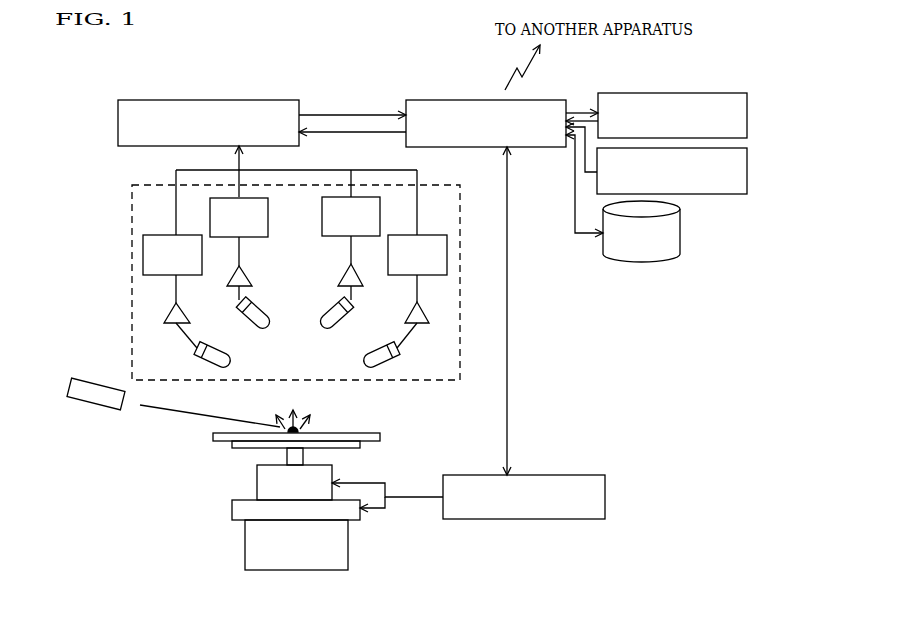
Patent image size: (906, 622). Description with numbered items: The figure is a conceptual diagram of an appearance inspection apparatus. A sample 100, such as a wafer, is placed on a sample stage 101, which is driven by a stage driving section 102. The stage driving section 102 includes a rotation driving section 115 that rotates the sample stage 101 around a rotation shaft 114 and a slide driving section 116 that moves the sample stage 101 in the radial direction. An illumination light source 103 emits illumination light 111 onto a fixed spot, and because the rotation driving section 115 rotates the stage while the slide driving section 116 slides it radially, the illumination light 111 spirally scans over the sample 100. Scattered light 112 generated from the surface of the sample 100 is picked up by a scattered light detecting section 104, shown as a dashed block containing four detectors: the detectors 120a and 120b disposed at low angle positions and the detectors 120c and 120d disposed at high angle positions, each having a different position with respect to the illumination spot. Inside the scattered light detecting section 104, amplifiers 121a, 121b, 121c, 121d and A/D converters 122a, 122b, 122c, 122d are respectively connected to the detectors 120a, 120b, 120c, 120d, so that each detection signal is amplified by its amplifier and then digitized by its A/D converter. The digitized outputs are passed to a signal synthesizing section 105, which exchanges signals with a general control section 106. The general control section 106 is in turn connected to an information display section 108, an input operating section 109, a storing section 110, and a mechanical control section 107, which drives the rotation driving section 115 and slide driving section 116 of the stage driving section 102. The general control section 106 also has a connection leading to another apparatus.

The sample 100 is at (213, 437).
The sample stage 101 is at (235, 448).
The stage driving section 102 is at (242, 517).
The illumination light source 103 is at (72, 380).
The scattered light detecting section 104 is at (132, 185).
The signal synthesizing section 105 is at (195, 100).
The general control section 106 is at (455, 100).
The mechanical control section 107 is at (562, 475).
The information display section 108 is at (712, 93).
The input operating section 109 is at (710, 194).
The storing section 110 is at (677, 258).
The illumination light 111 is at (203, 414).
The scattered light 112 is at (310, 424).
The rotation shaft 114 is at (303, 456).
The rotation driving section 115 is at (257, 480).
The slide driving section 116 is at (164, 482).
The detector 120a is at (195, 352).
The detector 120b is at (400, 355).
The detector 120c is at (270, 325).
The detector 120d is at (340, 328).
The amplifier 121a is at (164, 314).
The amplifier 121b is at (430, 315).
The amplifier 121c is at (227, 282).
The amplifier 121d is at (338, 278).
The A/D converter 122a is at (143, 250).
The A/D converter 122b is at (447, 251).
The A/D converter 122c is at (268, 237).
The A/D converter 122d is at (322, 215).